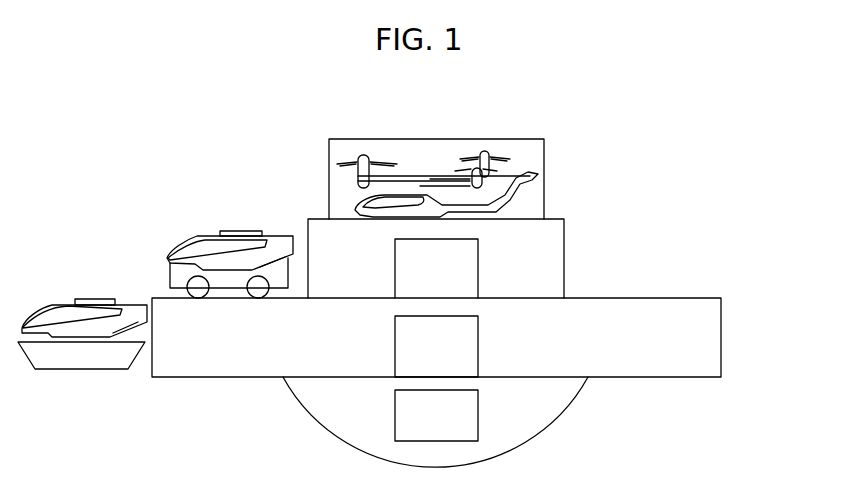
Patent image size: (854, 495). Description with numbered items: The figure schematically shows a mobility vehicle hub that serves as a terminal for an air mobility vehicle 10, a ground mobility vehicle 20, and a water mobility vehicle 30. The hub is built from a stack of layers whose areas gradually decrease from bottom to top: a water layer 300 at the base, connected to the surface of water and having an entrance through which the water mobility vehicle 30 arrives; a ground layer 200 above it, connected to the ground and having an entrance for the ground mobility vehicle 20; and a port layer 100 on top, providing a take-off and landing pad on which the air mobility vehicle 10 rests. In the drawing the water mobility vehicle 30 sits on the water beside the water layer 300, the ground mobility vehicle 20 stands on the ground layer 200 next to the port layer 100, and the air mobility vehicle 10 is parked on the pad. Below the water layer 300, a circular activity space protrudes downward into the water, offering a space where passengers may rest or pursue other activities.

The air mobility vehicle 10 is at (408, 192).
The ground mobility vehicle 20 is at (238, 243).
The water mobility vehicle 30 is at (92, 307).
The port layer 100 is at (544, 178).
The ground layer 200 is at (564, 257).
The water layer 300 is at (721, 335).